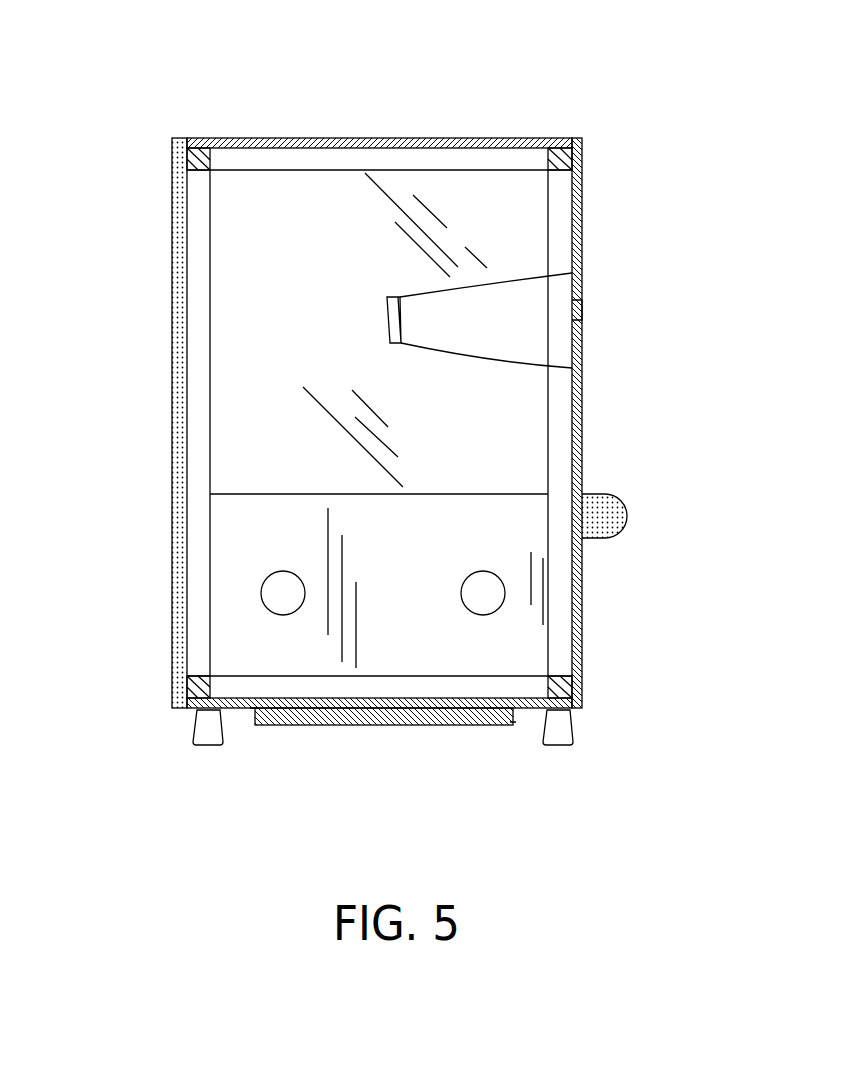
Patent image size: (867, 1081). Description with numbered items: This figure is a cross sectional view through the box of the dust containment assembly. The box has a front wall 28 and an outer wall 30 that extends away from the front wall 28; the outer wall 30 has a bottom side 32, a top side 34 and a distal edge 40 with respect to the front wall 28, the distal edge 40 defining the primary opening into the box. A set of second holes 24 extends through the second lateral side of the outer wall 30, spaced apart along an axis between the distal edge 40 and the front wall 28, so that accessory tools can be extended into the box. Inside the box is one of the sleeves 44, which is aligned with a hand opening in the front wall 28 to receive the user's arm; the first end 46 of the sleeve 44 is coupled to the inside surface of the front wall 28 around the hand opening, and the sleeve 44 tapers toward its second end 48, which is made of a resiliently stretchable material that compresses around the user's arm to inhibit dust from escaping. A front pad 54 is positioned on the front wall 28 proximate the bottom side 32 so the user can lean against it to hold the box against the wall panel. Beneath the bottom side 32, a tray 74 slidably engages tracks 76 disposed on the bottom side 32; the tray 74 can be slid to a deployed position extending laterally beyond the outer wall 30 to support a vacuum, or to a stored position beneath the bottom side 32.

The second holes 24 is at (261, 590).
The front wall 28 is at (583, 208).
The outer wall 30 is at (417, 217).
The bottom side 32 is at (240, 710).
The top side 34 is at (308, 138).
The distal edge 40 is at (185, 229).
The sleeves 44 is at (520, 280).
The first end 46 is at (574, 310).
The second end 48 is at (388, 318).
The front pad 54 is at (613, 503).
The tray 74 is at (448, 724).
The tracks 76 is at (253, 710).